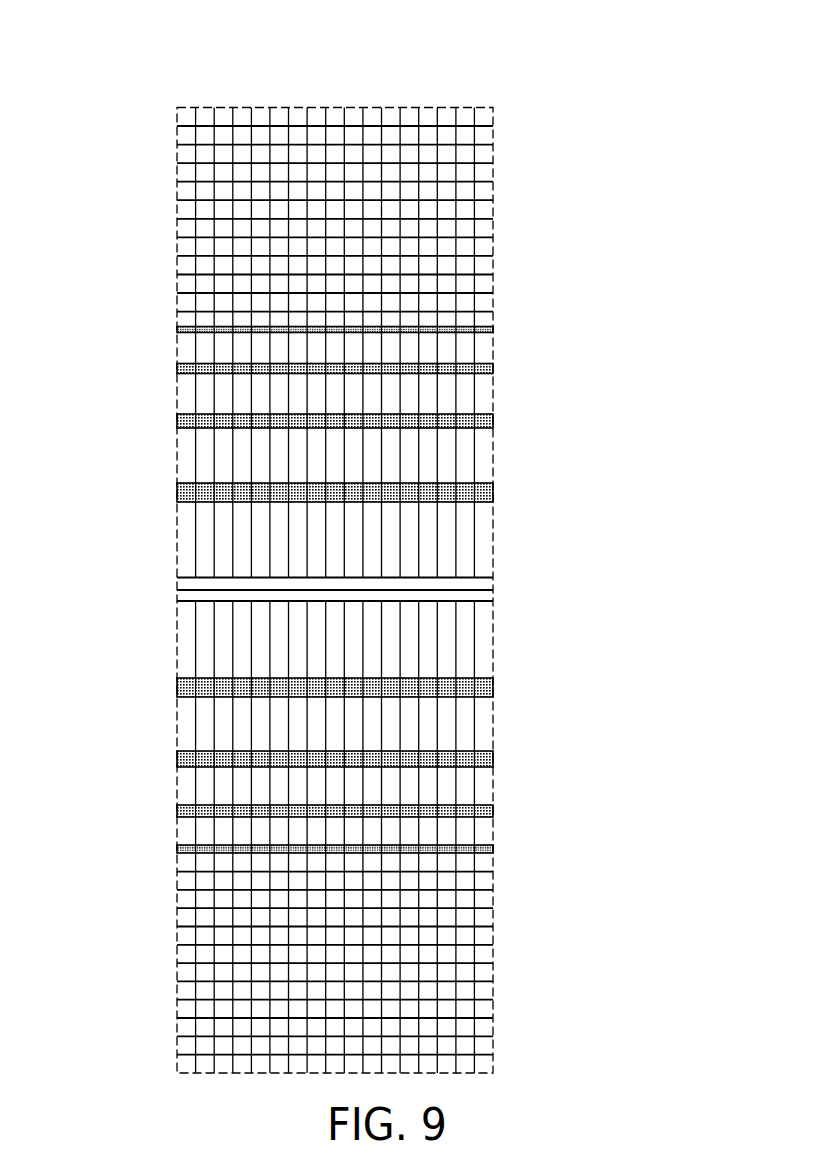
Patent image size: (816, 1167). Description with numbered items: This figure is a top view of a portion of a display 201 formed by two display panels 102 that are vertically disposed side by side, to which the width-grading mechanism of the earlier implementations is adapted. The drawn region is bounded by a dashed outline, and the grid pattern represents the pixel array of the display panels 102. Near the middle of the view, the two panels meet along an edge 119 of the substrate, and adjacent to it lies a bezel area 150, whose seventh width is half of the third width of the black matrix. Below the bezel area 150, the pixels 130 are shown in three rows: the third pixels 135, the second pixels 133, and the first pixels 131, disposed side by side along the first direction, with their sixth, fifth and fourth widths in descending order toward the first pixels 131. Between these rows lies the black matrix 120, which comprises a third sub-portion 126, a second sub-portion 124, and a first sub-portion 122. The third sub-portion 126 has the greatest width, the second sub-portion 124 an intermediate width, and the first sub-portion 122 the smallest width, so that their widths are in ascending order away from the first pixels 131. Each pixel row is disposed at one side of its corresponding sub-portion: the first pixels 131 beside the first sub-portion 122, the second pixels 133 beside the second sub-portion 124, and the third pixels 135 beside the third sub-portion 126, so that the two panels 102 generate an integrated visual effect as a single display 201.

The display 201 is at (80, 31).
The display panel 102 is at (177, 543).
The edge 119 is at (480, 585).
The bezel area 150 is at (480, 596).
The pixels 130 is at (455, 707).
The third pixels 135 is at (485, 638).
The second pixels 133 is at (485, 740).
The first pixels 131 is at (427, 786).
The black matrix 120 is at (250, 748).
The third sub-portion 126 is at (180, 686).
The second sub-portion 124 is at (180, 758).
The first sub-portion 122 is at (280, 812).